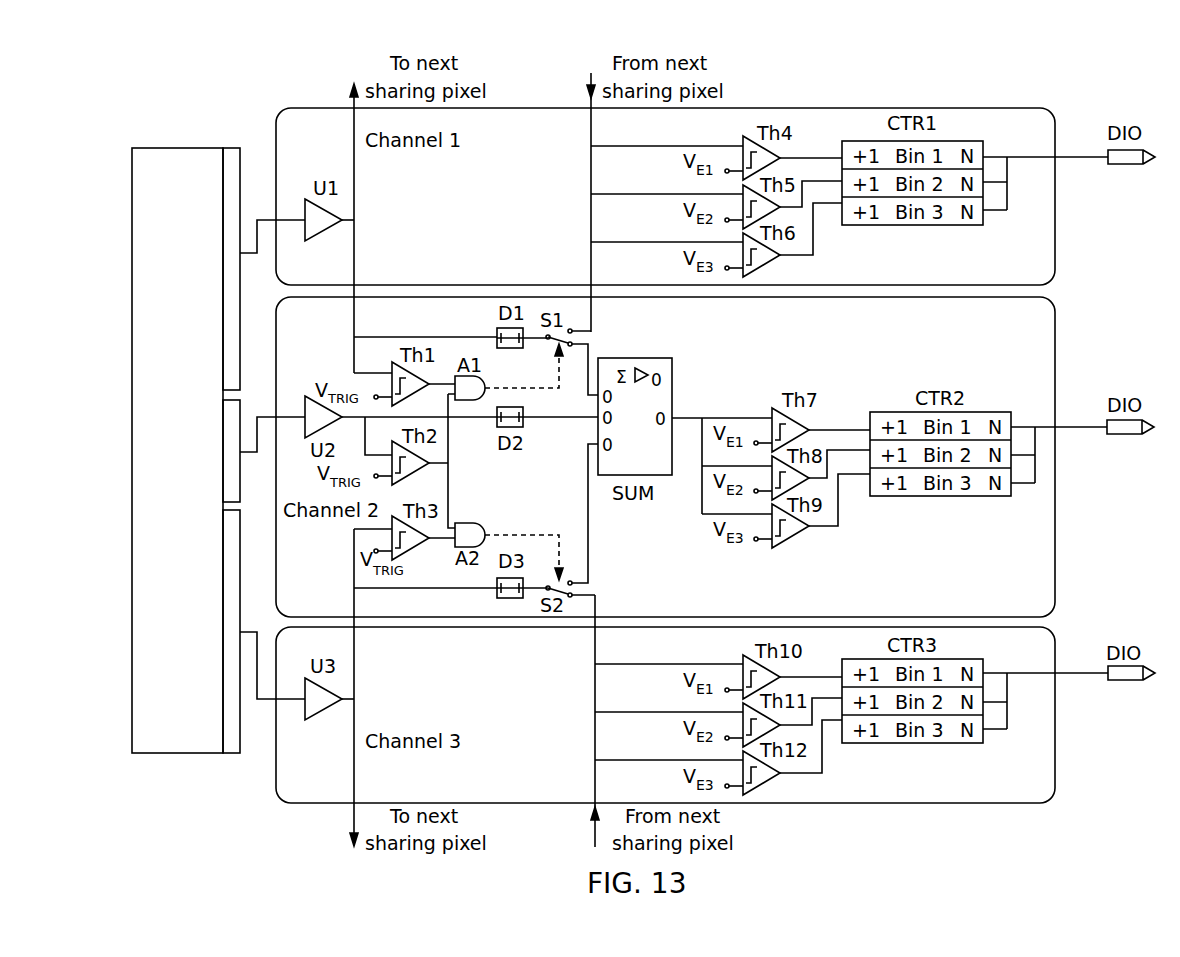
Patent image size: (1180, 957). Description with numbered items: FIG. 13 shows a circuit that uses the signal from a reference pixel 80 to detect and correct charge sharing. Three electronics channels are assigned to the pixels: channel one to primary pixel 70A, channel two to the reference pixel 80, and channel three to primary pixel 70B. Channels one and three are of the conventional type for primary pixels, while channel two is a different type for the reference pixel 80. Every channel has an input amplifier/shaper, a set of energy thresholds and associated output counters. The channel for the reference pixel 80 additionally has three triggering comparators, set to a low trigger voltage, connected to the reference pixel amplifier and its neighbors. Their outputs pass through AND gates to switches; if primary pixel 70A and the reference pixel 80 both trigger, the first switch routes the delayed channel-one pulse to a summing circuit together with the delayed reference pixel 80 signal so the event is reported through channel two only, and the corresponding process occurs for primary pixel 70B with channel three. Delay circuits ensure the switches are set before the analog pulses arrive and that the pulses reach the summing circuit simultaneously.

The primary pixel 70A is at (223, 251).
The reference pixel 80 is at (223, 449).
The primary pixel 70B is at (223, 636).